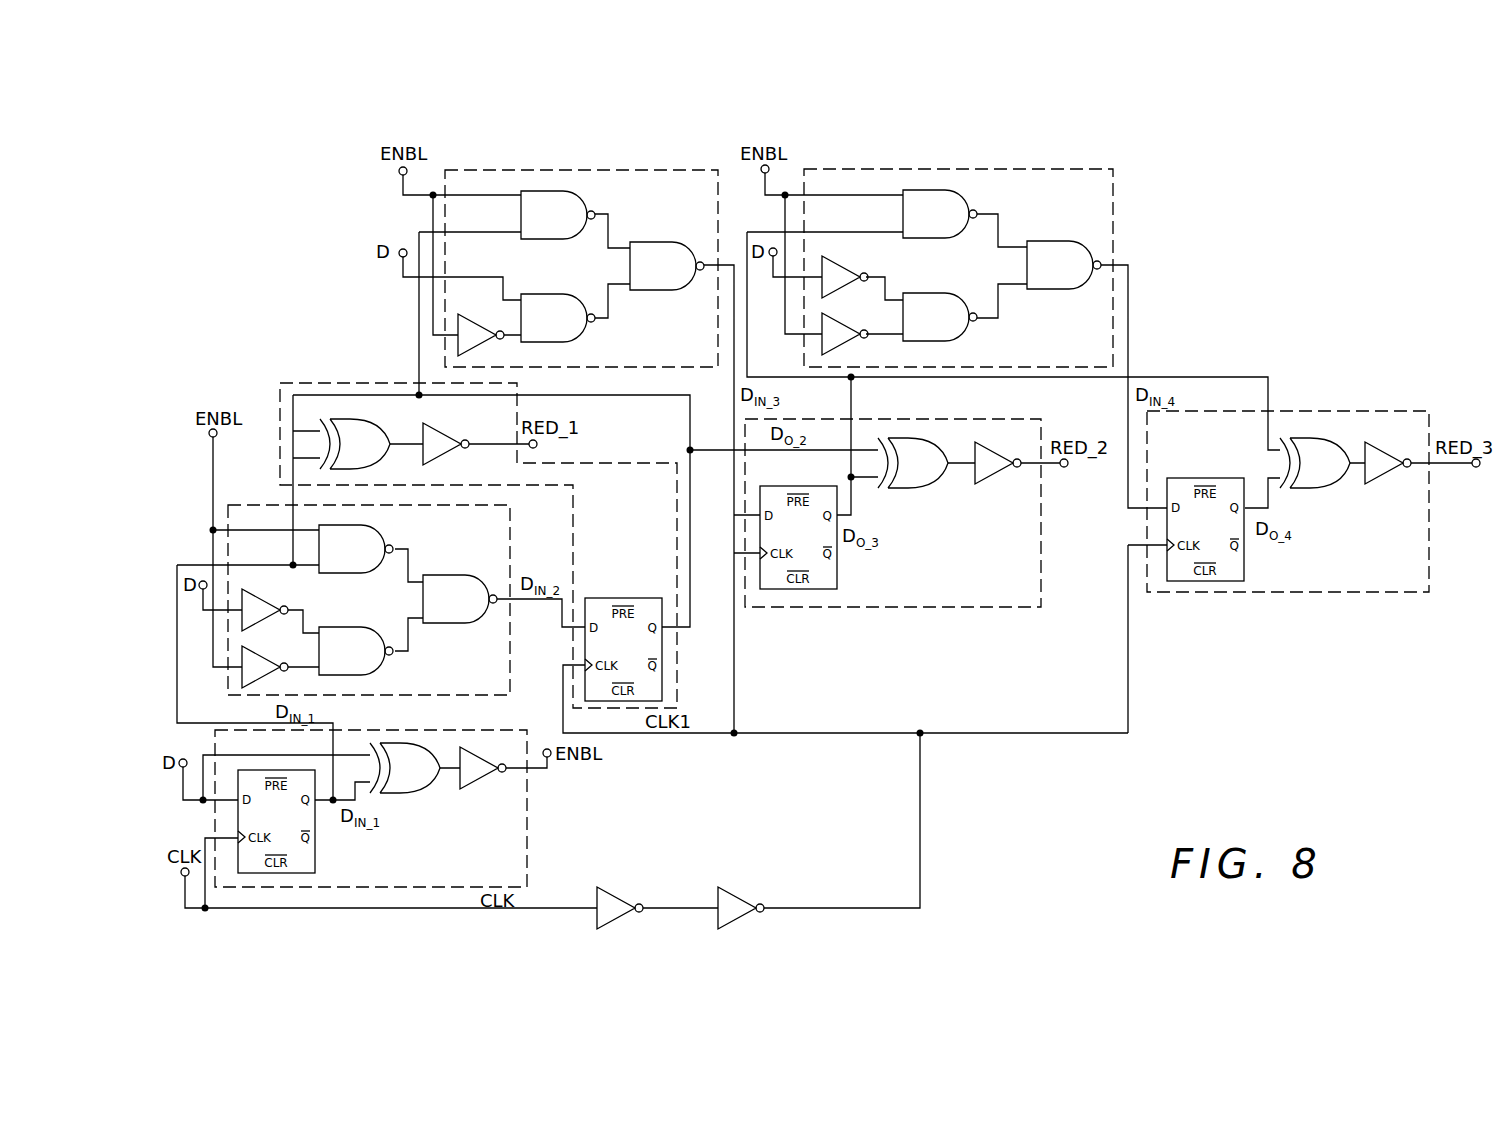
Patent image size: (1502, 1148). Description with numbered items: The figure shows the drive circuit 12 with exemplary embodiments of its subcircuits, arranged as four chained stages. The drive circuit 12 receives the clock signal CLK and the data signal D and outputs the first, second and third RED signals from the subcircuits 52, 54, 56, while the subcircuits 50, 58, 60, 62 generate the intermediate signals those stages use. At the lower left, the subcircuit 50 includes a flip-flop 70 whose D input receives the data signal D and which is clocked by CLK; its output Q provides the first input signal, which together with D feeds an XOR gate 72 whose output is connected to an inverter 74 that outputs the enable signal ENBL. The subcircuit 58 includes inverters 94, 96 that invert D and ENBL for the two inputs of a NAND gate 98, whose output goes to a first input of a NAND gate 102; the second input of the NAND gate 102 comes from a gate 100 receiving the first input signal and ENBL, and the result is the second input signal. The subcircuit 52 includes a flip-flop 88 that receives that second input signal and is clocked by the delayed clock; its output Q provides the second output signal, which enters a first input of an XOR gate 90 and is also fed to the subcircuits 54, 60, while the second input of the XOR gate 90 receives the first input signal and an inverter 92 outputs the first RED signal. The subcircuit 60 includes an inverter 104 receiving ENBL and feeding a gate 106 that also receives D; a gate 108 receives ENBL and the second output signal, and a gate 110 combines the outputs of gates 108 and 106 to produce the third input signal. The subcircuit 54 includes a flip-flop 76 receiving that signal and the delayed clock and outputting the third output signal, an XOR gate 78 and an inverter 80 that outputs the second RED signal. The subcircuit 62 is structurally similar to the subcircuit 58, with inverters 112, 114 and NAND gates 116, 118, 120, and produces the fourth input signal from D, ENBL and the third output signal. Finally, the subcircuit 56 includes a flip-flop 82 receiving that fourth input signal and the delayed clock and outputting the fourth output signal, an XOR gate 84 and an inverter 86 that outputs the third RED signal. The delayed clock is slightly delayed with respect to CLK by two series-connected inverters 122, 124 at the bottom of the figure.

The drive circuit 12 is at (1278, 192).
The subcircuit 50 is at (527, 820).
The subcircuit 52 is at (588, 463).
The subcircuit 54 is at (917, 608).
The subcircuit 56 is at (1330, 411).
The subcircuit 58 is at (272, 503).
The subcircuit 60 is at (545, 169).
The subcircuit 62 is at (1038, 168).
The flip-flop 70 is at (315, 858).
The exclusive-OR (XOR) gate 72 is at (398, 793).
The inverter 74 is at (472, 781).
The flip-flop 76 is at (838, 572).
The XOR gate 78 is at (893, 489).
The inverter 80 is at (1000, 478).
The flip-flop 82 is at (1245, 557).
The XOR gate 84 is at (1305, 489).
The inverter 86 is at (1372, 479).
The flip-flop 88 is at (645, 598).
The XOR gate 90 is at (362, 421).
The inverter 92 is at (443, 427).
The inverter 94 is at (255, 592).
The inverter 96 is at (255, 650).
The NAND gate 98 is at (338, 627).
The NAND gate 100 is at (370, 526).
The NAND gate 102 is at (440, 575).
The inverter 104 is at (488, 312).
The NAND gate 106 is at (531, 294).
The NAND gate 108 is at (575, 191).
The NAND gate 110 is at (641, 242).
The inverter 112 is at (838, 262).
The inverter 114 is at (838, 319).
The NAND gate 116 is at (920, 293).
The NAND gate 118 is at (955, 190).
The NAND gate 120 is at (1040, 241).
The inverter 122 is at (605, 885).
The inverter 124 is at (722, 885).